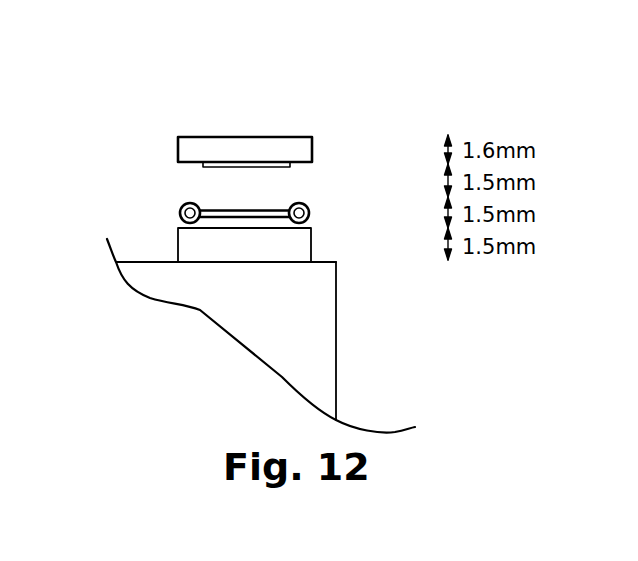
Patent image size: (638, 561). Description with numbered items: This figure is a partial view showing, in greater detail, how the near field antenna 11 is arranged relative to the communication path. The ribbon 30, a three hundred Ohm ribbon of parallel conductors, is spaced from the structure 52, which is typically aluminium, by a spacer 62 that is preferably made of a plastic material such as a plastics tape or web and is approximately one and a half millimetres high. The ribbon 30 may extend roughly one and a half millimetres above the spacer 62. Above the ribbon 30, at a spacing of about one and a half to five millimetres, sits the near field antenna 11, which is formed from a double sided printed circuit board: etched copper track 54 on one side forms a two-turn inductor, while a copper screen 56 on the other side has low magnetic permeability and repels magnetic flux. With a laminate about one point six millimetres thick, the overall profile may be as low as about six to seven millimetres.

The near field antenna 11 is at (280, 138).
The copper screen 56 is at (248, 136).
The track 54 is at (217, 167).
The ribbon 30 is at (329, 213).
The spacer 62 is at (193, 242).
The structure 52 is at (322, 335).